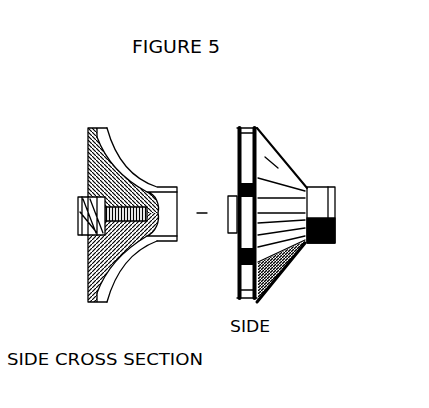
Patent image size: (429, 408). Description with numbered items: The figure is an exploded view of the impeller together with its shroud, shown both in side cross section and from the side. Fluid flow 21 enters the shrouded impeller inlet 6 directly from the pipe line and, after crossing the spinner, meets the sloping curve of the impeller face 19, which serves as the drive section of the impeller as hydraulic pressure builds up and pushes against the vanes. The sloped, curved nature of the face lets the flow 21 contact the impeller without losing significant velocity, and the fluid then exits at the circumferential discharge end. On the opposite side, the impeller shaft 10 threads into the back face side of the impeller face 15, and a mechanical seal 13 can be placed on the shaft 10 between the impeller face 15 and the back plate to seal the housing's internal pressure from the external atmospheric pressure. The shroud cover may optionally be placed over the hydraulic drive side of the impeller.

The impeller inlet 6 is at (337, 201).
The impeller shaft 10 is at (70, 213).
The mechanical seal 13 is at (85, 233).
The impeller face 15 is at (92, 158).
The sloping curve of the impeller face 19 is at (114, 248).
The fluid flow 21 is at (391, 217).